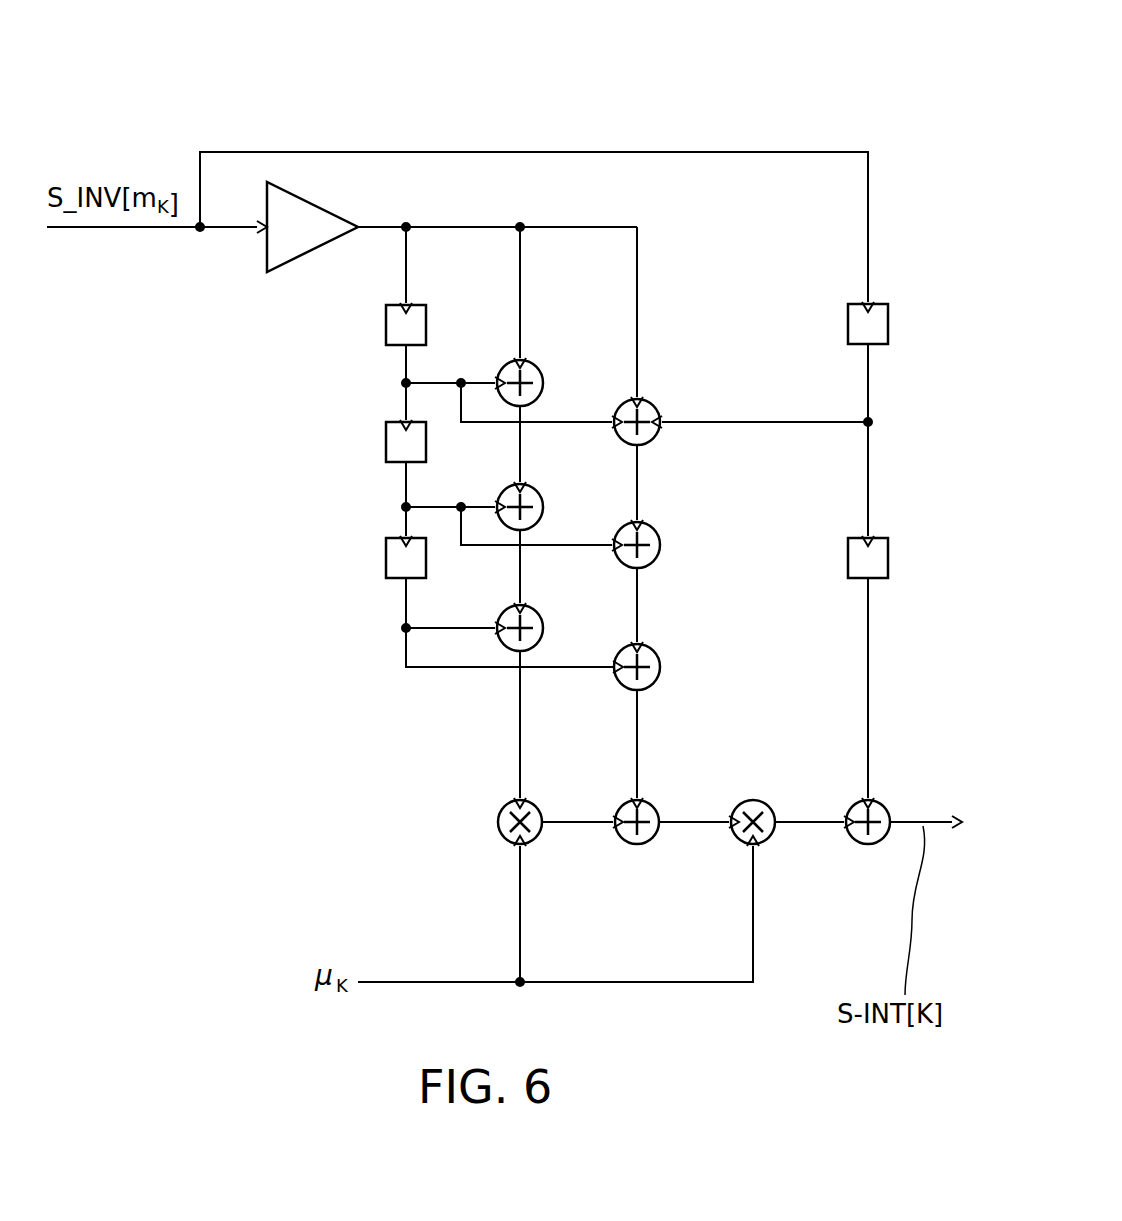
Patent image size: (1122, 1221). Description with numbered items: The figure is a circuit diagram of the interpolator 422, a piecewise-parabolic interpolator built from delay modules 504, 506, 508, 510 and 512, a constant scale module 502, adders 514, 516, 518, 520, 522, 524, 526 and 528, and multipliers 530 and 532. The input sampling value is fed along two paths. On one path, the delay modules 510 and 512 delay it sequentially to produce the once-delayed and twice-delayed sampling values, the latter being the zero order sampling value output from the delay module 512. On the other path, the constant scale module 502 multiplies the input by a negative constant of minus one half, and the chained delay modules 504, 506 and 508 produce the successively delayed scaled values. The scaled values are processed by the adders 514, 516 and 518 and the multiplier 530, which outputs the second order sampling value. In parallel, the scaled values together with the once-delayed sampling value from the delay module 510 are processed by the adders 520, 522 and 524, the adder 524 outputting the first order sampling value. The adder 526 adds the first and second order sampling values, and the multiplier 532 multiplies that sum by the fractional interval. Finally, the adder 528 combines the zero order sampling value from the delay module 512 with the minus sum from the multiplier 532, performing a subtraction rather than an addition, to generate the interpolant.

The interpolator 422 is at (717, 101).
The constant scale module 502 is at (313, 200).
The delay module 504 is at (386, 322).
The delay module 506 is at (386, 440).
The delay module 508 is at (386, 556).
The delay module 510 is at (890, 320).
The delay module 512 is at (890, 555).
The adder 514 is at (543, 377).
The adder 516 is at (543, 505).
The adder 518 is at (543, 626).
The adder 520 is at (660, 418).
The adder 522 is at (660, 543).
The adder 524 is at (660, 664).
The adder 526 is at (642, 845).
The adder 528 is at (873, 845).
The multiplier 530 is at (504, 841).
The multiplier 532 is at (773, 843).